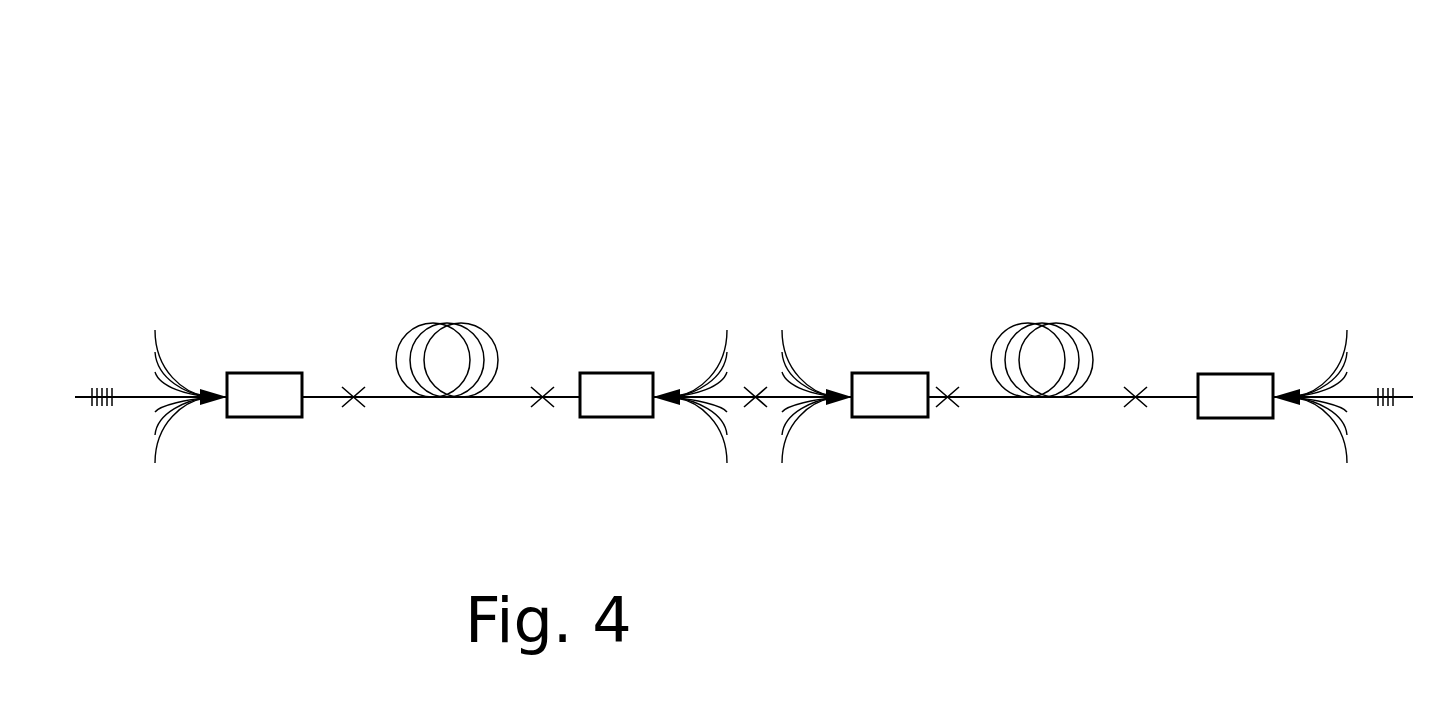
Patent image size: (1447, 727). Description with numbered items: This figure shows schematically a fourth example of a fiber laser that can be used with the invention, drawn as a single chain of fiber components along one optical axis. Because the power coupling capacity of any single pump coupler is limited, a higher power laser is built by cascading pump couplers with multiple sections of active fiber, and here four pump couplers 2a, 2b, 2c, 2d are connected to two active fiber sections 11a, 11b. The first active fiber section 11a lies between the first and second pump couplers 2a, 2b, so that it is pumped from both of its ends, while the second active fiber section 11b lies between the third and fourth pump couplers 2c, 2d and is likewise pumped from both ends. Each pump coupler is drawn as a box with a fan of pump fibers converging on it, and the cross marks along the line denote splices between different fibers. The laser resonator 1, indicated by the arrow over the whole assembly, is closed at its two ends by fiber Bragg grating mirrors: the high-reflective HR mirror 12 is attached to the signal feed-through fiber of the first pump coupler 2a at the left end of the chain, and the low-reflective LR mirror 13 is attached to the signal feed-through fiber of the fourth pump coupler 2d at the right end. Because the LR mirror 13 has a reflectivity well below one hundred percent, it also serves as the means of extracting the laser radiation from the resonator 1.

The fiber-based laser resonator 1 is at (790, 240).
The high-reflective (HR) FBG mirror 12 is at (125, 395).
The low-reflective (LR) FBG mirror 13 is at (1365, 397).
The pump coupler 2a is at (270, 373).
The pump coupler 2b is at (632, 373).
The pump coupler 2c is at (873, 373).
The pump coupler 2d is at (1223, 374).
The active fiber section 11a is at (447, 323).
The active fiber section 11b is at (1042, 323).